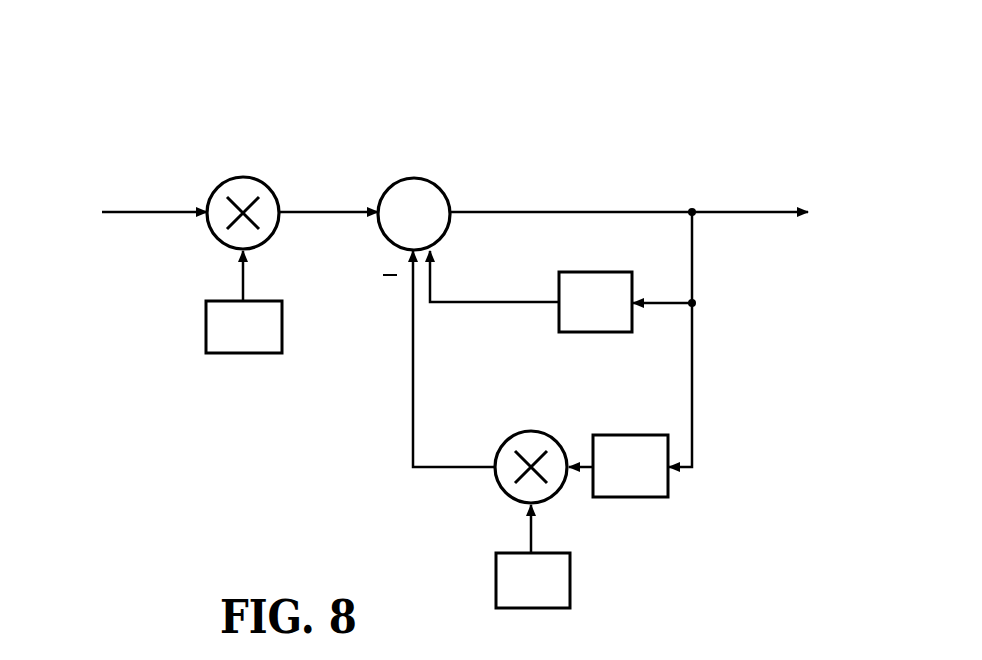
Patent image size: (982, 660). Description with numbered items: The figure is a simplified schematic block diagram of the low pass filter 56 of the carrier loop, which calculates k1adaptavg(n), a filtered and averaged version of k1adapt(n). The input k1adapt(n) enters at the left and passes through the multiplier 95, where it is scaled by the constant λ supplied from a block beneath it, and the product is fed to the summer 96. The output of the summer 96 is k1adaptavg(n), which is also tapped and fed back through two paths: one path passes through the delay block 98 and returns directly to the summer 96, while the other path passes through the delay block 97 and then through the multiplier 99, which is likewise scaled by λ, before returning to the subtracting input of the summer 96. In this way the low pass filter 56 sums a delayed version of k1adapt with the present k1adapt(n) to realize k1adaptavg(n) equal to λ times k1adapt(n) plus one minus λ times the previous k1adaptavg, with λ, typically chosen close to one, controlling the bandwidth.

The low pass filter 56 is at (612, 58).
The multiplier 95 is at (240, 178).
The summer 96 is at (417, 180).
The delay block 97 is at (630, 435).
The delay block 98 is at (587, 270).
The multiplier 99 is at (527, 430).